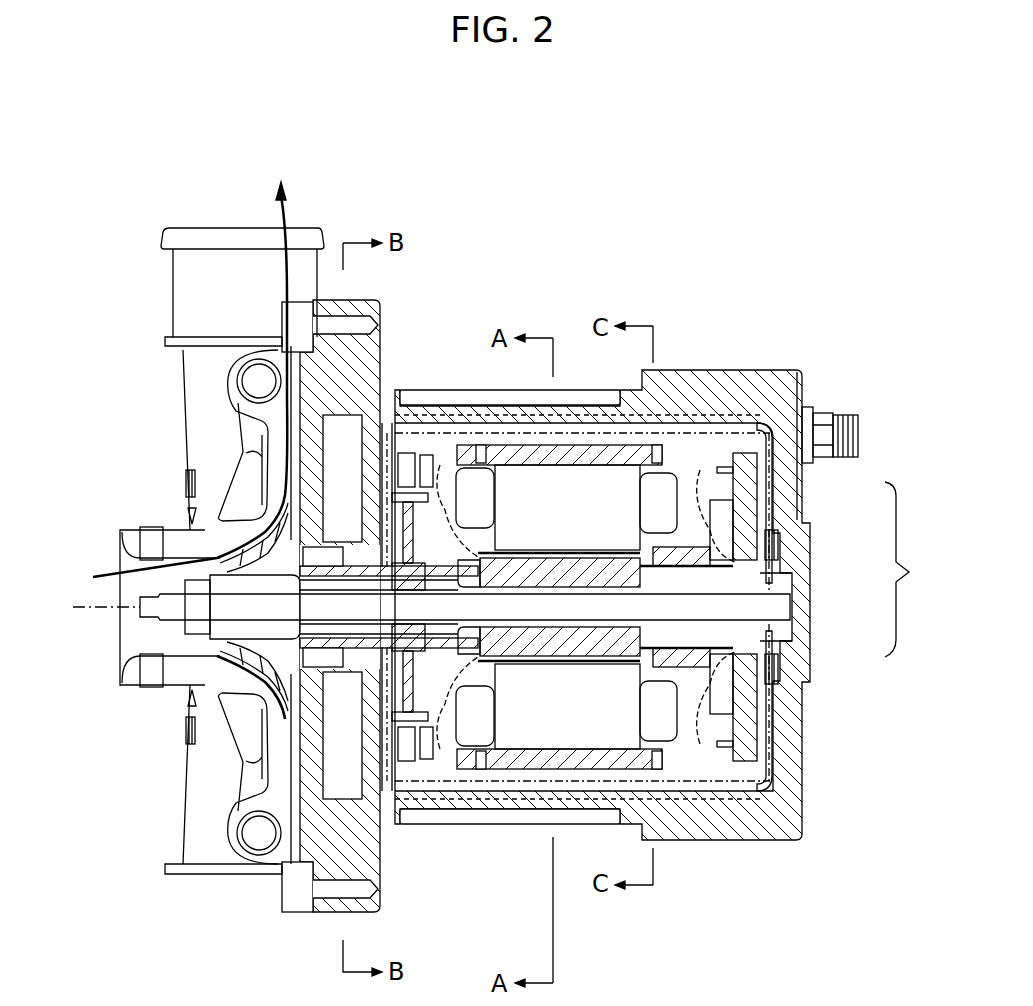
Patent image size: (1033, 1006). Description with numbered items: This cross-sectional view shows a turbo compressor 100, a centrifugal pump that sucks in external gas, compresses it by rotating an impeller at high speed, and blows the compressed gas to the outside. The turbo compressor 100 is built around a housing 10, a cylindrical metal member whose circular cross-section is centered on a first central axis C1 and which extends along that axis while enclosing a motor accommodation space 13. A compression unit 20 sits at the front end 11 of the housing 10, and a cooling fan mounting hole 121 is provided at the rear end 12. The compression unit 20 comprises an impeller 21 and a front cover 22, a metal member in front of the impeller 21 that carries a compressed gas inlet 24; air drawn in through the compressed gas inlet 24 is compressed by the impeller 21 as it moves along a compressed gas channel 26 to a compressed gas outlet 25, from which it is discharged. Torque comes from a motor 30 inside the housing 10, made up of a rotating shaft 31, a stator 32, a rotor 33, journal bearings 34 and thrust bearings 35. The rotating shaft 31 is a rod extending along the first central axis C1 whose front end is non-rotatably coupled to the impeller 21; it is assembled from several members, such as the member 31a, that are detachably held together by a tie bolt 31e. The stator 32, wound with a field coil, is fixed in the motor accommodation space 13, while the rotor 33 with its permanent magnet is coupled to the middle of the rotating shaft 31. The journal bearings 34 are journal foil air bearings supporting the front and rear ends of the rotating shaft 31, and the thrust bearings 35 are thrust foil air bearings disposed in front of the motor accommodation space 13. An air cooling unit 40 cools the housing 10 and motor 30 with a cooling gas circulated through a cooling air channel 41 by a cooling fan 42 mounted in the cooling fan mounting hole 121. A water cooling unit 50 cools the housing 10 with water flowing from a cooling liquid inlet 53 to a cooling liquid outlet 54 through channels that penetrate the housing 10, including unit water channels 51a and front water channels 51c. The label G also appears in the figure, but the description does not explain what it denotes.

The turbo compressor 100 is at (178, 160).
The housing 10 is at (680, 340).
The front end 11 is at (340, 360).
The rear end 12 is at (793, 382).
The motor accommodation space 13 is at (693, 478).
The compression unit 20 is at (168, 436).
The impeller 21 is at (222, 545).
The front cover 22 is at (150, 532).
The compressed gas inlet 24 is at (122, 655).
The compressed gas outlet 25 is at (306, 232).
The compressed gas channel 26 is at (283, 222).
The motor 30 is at (617, 705).
The rotating shaft 31 is at (468, 690).
The member 31a is at (430, 700).
The tie bolt 31e is at (763, 605).
The stator 32 is at (557, 730).
The rotor 33 is at (592, 643).
The journal bearings 34 is at (358, 556).
The thrust bearings 35 is at (480, 645).
The air cooling unit 40 is at (916, 569).
The cooling air channel 41 is at (385, 437).
The cooling fan 42 is at (777, 670).
The water cooling unit 50 is at (878, 406).
The unit water channels 51a is at (573, 405).
The front water channels 51c is at (340, 430).
The cooling liquid inlet 53 is at (825, 417).
The cooling liquid outlet 54 is at (858, 446).
The cooling fan mounting hole 121 is at (775, 542).
The first central axis C1 is at (88, 608).
The gap G is at (447, 510).